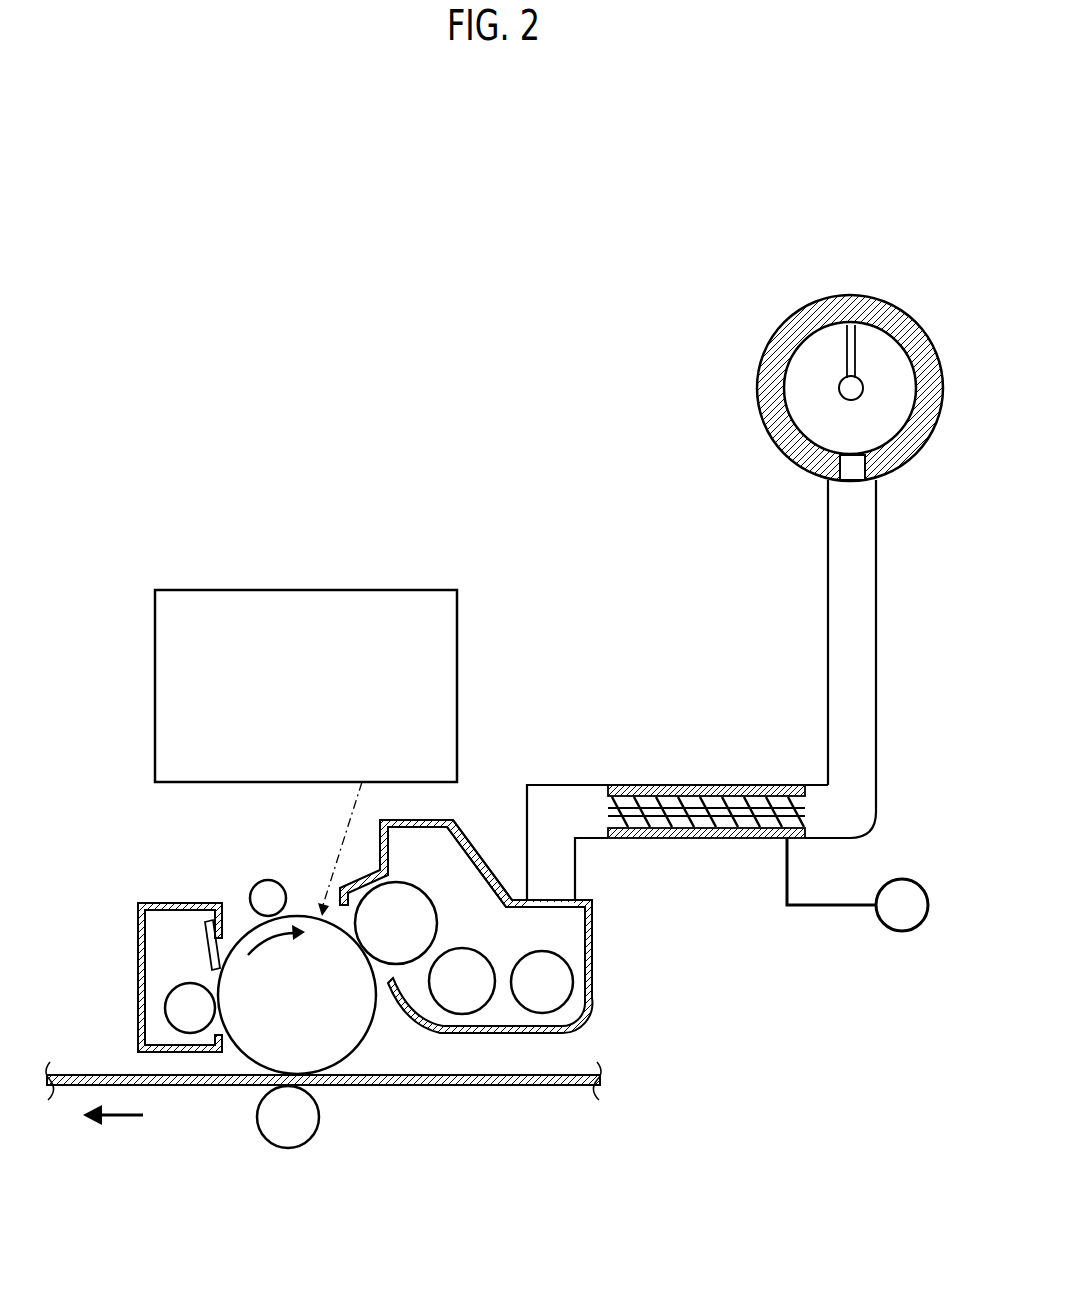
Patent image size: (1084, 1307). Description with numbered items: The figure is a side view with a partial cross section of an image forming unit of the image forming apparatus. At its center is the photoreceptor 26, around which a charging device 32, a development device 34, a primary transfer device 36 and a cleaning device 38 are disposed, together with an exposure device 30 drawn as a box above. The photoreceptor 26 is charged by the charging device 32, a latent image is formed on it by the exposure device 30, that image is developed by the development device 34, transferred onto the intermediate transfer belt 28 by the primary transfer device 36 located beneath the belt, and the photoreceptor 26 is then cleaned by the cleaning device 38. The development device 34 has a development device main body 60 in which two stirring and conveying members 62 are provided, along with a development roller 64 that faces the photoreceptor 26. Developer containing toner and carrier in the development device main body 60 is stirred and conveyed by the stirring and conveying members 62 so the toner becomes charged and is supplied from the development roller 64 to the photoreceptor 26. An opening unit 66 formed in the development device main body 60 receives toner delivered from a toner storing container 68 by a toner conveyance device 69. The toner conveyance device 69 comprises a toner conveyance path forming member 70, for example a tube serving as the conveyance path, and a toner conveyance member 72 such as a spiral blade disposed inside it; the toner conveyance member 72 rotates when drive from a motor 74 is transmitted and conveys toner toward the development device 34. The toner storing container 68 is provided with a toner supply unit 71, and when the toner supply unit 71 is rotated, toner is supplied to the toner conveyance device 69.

The photoreceptor 26 is at (348, 1052).
The intermediate transfer belt 28 is at (70, 1073).
The exposure device 30 is at (241, 610).
The charging device 32 is at (273, 881).
The development device 34 is at (492, 872).
The primary transfer device 36 is at (285, 1140).
The cleaning device 38 is at (138, 938).
The development device main body 60 is at (501, 914).
The stirring and conveying member 62 is at (472, 1000).
The development roller 64 is at (415, 905).
The opening unit 66 is at (556, 902).
The toner storing container 68 is at (850, 358).
The toner conveyance device 69 is at (877, 658).
The toner conveyance path forming member 70 is at (701, 805).
The toner supply unit 71 is at (857, 352).
The toner conveyance member 72 is at (700, 812).
The motor 74 is at (898, 880).